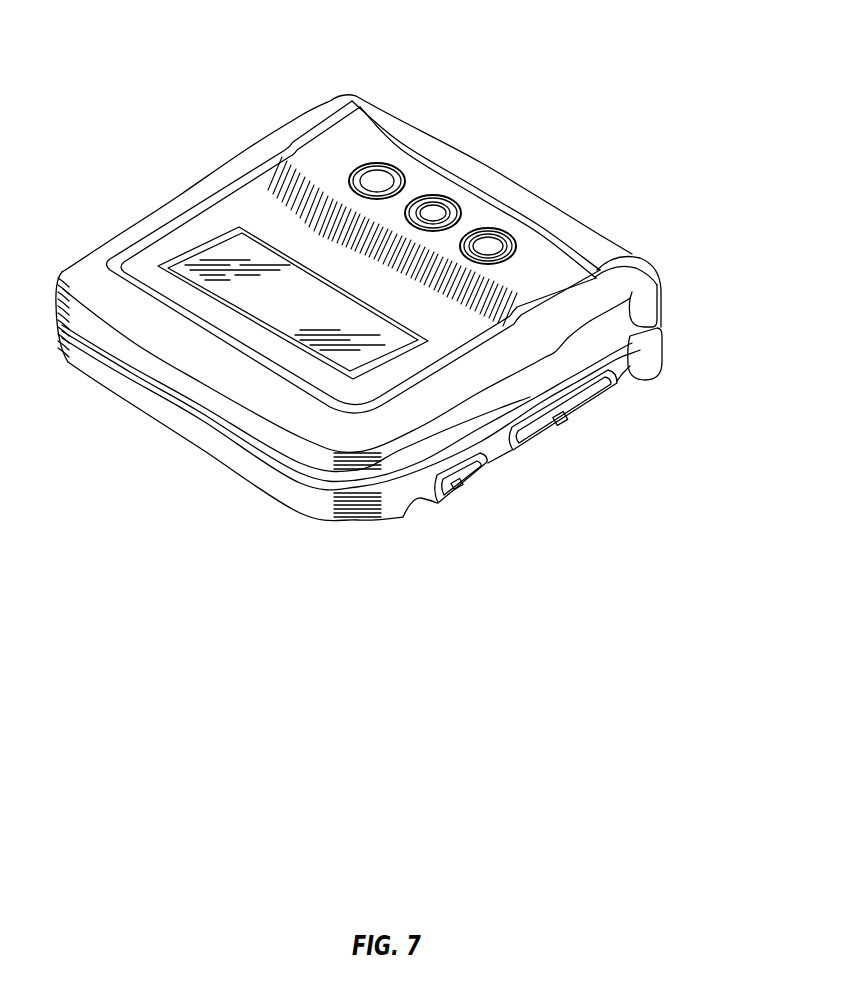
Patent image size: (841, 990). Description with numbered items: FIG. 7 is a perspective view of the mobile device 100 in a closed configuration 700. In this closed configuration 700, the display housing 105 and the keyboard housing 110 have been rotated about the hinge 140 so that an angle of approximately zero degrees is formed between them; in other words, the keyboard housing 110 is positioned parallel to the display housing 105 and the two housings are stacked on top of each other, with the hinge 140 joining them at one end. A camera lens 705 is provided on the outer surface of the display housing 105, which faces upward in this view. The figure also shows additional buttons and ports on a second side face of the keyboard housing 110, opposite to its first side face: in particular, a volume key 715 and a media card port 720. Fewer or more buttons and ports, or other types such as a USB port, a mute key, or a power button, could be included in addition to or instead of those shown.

The closed configuration 700 is at (159, 45).
The mobile device 100 is at (137, 238).
The display housing 105 is at (128, 353).
The keyboard housing 110 is at (167, 422).
The hinge 140 is at (650, 312).
The camera lens 705 is at (380, 183).
The volume key 715 is at (585, 412).
The media card port 720 is at (468, 482).